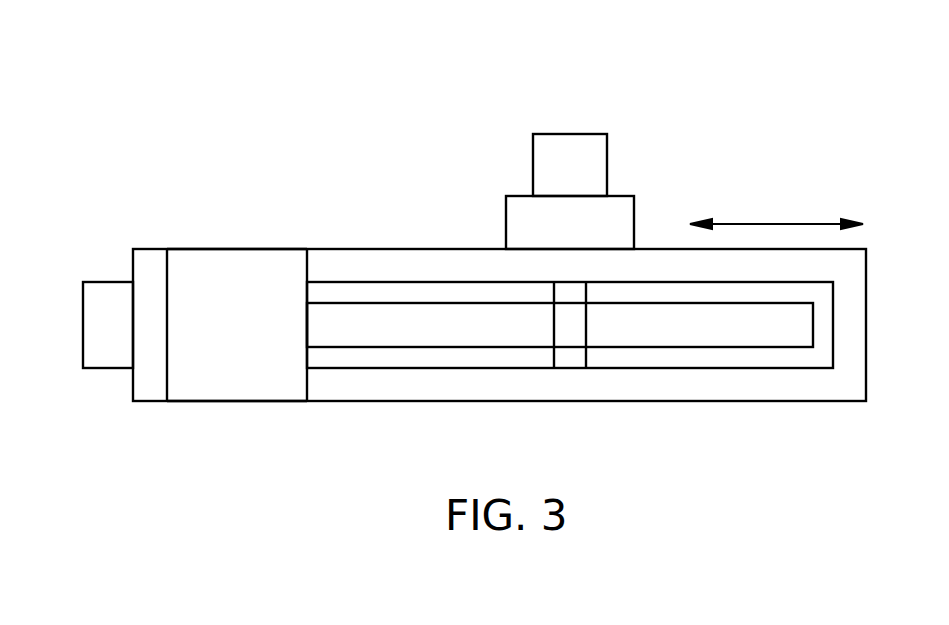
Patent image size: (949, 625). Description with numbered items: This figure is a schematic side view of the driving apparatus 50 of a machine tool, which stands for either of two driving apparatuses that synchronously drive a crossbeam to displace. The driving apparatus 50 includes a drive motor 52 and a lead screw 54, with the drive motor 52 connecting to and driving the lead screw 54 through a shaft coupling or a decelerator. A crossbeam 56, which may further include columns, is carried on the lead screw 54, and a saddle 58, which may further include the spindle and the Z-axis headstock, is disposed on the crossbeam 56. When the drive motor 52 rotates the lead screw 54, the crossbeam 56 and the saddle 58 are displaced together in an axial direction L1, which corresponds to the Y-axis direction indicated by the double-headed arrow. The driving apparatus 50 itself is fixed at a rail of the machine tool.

The driving apparatus 50 is at (265, 98).
The drive motor 52 is at (223, 267).
The lead screw 54 is at (798, 320).
The crossbeam 56 is at (625, 210).
The saddle 58 is at (593, 159).
The axial direction L1 is at (765, 224).